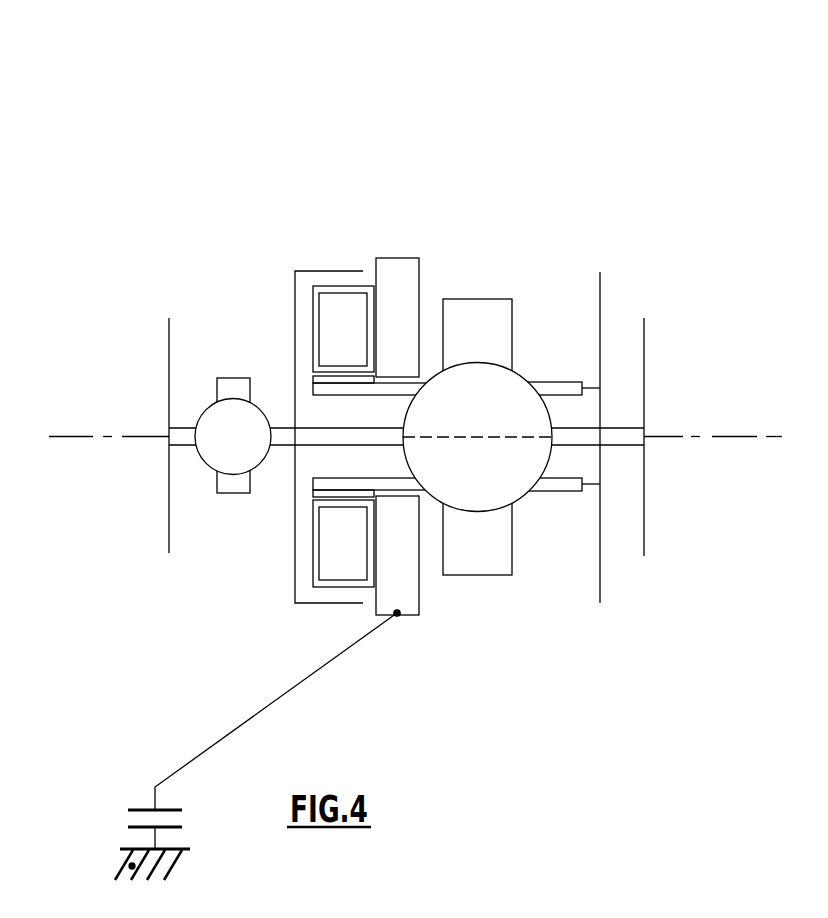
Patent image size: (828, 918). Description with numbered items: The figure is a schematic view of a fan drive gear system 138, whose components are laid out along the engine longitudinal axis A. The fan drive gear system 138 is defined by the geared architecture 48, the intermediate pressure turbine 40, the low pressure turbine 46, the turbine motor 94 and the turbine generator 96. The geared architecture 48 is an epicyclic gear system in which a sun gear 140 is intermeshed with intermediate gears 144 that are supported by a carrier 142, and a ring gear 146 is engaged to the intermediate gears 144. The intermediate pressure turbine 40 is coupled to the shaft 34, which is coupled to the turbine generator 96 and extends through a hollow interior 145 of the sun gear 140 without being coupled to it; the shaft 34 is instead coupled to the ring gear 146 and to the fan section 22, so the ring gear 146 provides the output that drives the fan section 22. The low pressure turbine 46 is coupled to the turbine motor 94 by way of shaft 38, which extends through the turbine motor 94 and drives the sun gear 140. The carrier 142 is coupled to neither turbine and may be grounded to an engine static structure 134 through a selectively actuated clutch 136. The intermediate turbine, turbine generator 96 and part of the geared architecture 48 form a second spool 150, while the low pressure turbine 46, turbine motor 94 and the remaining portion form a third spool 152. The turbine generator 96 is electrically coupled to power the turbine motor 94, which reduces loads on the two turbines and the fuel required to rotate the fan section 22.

The fan drive gear system 138 is at (647, 80).
The geared architecture 48 is at (358, 237).
The fan section 22 is at (169, 367).
The intermediate pressure turbine 40 is at (644, 527).
The shaft 34 is at (613, 428).
The shaft 38 is at (566, 383).
The low pressure turbine 46 is at (600, 580).
The turbine generator 96 is at (233, 462).
The turbine motor 94 is at (443, 488).
The sun gear 140 is at (392, 362).
The carrier 142 is at (397, 270).
The intermediate gears 144 is at (333, 293).
The hollow interior 145 is at (335, 452).
The ring gear 146 is at (313, 271).
The second spool 150 is at (594, 458).
The third spool 152 is at (536, 512).
The selectively actuated clutch 136 is at (112, 819).
The engine static structure 134 is at (132, 866).
The engine longitudinal axis A is at (725, 433).